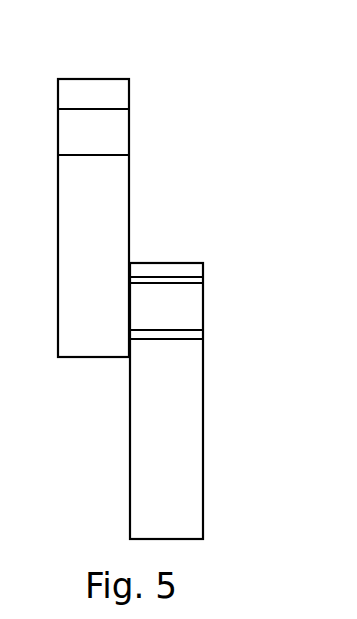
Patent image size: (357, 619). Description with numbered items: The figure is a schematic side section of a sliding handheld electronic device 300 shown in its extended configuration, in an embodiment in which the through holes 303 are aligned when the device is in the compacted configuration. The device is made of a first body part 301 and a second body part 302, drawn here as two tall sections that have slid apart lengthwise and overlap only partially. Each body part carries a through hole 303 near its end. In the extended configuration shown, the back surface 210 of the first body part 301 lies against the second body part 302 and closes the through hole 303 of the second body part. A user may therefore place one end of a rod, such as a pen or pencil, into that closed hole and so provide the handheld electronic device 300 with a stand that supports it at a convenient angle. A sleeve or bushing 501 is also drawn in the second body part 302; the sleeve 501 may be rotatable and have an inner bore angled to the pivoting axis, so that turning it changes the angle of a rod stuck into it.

The stacked assembly 300 is at (182, 277).
The first body part 301 is at (170, 218).
The second stack 302 is at (225, 401).
The through hole 303 is at (189, 189).
The back surface 210 is at (170, 159).
The sleeve or bushing 501 is at (226, 354).